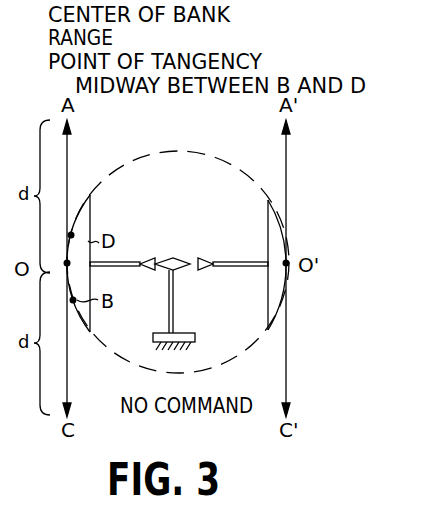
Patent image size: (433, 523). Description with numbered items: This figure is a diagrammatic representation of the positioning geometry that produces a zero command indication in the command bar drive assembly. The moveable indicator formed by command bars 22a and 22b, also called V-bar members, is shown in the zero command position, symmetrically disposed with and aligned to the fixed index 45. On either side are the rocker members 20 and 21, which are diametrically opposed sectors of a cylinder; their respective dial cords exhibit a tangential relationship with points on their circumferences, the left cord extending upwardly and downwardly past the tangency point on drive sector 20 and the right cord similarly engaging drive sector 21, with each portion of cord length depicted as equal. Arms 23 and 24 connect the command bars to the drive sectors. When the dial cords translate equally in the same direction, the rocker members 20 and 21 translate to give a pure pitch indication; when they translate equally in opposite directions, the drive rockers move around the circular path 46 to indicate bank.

The rocker member 20 is at (91, 214).
The rocker member 21 is at (267, 222).
The command bar 22a is at (150, 258).
The command bar 22b is at (203, 258).
The left arm 23 is at (113, 262).
The right arm 24 is at (225, 268).
The fixed index 45 is at (165, 272).
The circular path 46 is at (181, 151).